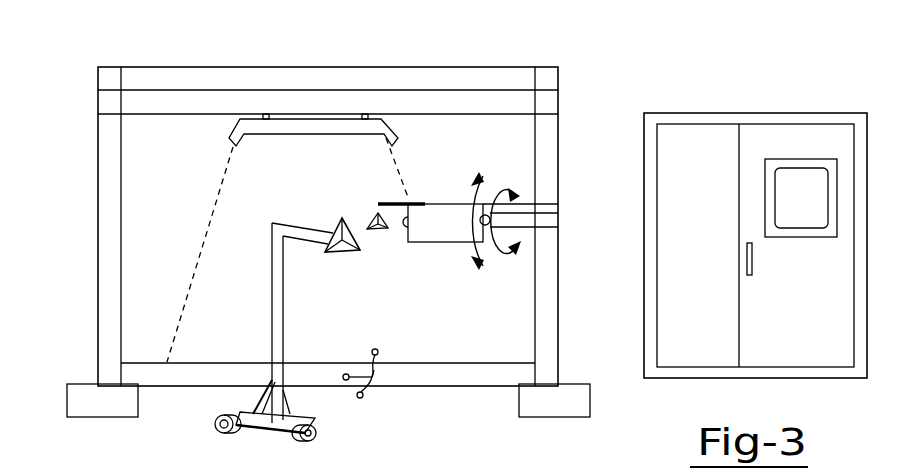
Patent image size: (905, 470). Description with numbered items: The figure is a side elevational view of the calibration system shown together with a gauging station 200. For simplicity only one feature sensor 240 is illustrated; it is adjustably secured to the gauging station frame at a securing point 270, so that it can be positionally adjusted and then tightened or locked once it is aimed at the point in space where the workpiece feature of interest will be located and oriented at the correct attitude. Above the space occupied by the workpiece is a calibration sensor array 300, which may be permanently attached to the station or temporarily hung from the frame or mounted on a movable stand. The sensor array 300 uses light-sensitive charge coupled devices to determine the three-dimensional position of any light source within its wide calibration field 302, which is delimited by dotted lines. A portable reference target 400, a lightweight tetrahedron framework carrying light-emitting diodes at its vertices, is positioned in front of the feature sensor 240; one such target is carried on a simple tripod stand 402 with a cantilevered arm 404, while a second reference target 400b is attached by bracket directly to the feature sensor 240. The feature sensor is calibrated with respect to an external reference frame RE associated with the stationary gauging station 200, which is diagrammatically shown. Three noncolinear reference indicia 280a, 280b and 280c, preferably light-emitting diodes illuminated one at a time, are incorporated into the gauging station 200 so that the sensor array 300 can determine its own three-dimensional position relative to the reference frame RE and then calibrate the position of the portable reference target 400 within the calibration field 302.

The gauging station 200 is at (200, 55).
The calibration sensor array 300 is at (330, 128).
The calibration field 302 is at (207, 212).
The feature sensor 240 is at (431, 243).
The adjustable securing point 270 is at (545, 204).
The portable reference target 400 is at (342, 253).
The second reference target 400b is at (370, 227).
The cantilevered arm 404 is at (302, 232).
The tripod stand 402 is at (272, 330).
The reference indicium 280a is at (375, 349).
The reference indicium 280b is at (361, 398).
The reference indicium 280c is at (344, 375).
The external reference frame RE is at (374, 370).